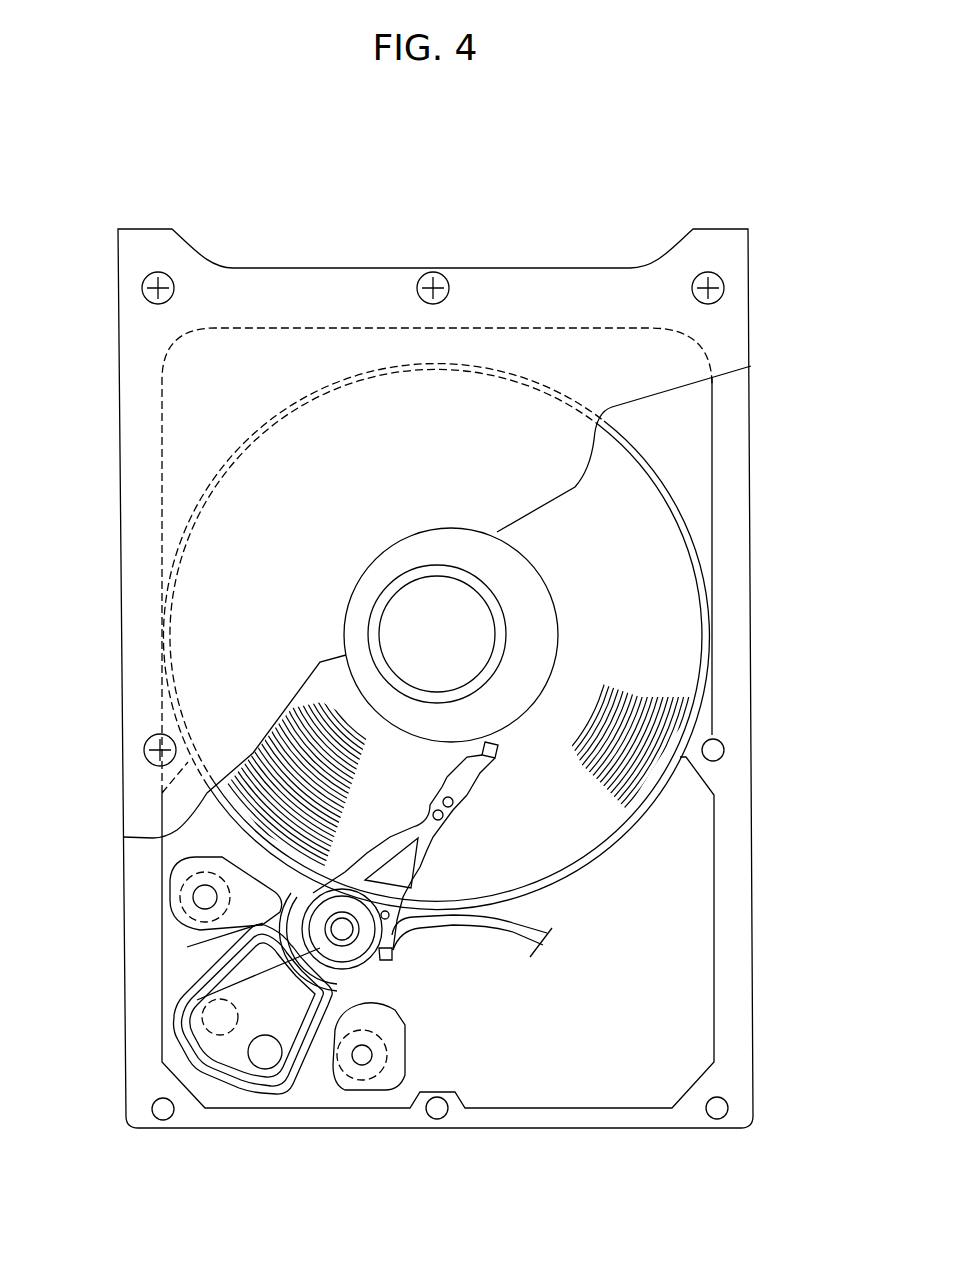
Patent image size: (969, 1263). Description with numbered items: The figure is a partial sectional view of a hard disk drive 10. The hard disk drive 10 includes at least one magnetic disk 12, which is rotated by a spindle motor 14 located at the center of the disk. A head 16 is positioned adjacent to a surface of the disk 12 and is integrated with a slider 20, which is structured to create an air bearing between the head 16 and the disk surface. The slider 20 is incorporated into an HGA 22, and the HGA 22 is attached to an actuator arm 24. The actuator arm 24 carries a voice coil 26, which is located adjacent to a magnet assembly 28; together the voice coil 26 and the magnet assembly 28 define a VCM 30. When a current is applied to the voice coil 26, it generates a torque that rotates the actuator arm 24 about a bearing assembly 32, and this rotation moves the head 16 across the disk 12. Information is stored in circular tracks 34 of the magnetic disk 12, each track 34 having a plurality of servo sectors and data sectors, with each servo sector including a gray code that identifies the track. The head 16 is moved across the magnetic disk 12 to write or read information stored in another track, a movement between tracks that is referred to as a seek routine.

The hard disk drive 10 is at (556, 187).
The magnetic disk 12 is at (672, 573).
The spindle motor 14 is at (415, 608).
The head 16 is at (500, 750).
The slider 20 is at (480, 765).
The HGA 22 is at (442, 852).
The actuator arm 24 is at (262, 947).
The voice coil 26 is at (196, 1008).
The magnet assembly 28 is at (205, 960).
The VCM 30 is at (318, 1072).
The bearing assembly 32 is at (352, 937).
The circular tracks 34 is at (307, 742).